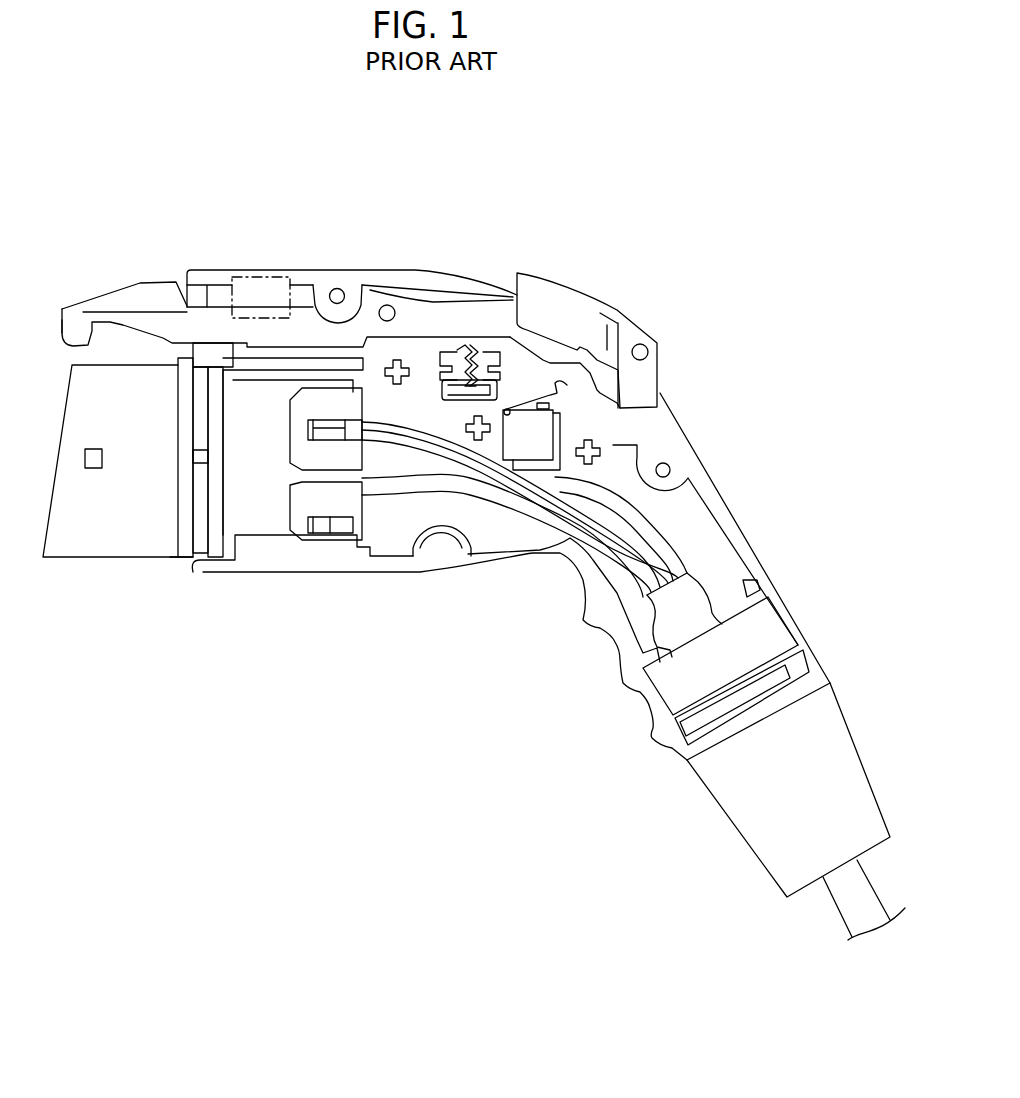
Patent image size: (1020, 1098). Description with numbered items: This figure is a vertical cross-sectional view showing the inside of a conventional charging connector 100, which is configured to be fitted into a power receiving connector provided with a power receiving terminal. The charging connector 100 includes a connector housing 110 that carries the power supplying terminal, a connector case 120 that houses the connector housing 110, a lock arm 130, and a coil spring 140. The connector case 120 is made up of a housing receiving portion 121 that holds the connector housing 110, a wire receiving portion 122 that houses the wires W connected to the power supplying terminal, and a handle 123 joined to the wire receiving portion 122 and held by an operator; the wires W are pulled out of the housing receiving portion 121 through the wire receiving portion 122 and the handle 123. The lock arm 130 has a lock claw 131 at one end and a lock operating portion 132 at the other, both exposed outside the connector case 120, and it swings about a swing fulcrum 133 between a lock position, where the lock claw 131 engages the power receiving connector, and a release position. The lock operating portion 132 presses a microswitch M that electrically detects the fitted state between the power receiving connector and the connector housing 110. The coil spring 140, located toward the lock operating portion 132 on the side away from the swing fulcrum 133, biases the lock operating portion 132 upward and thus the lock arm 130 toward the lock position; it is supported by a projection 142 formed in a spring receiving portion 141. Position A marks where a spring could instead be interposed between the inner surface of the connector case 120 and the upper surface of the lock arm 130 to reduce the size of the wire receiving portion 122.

The charging connector 100 is at (632, 264).
The connector housing 110 is at (140, 538).
The connector case 120 is at (315, 576).
The housing receiving portion 121 is at (250, 543).
The wire receiving portion 122 is at (497, 527).
The handle 123 is at (778, 589).
The lock arm 130 is at (109, 290).
The lock claw 131 is at (73, 337).
The lock operating portion 132 is at (585, 303).
The swing fulcrum 133 is at (388, 305).
The coil spring 140 is at (486, 342).
The spring receiving portion 141 is at (455, 395).
The projection 142 is at (452, 373).
The position A is at (282, 276).
The microswitch M is at (540, 406).
The wires W is at (658, 536).